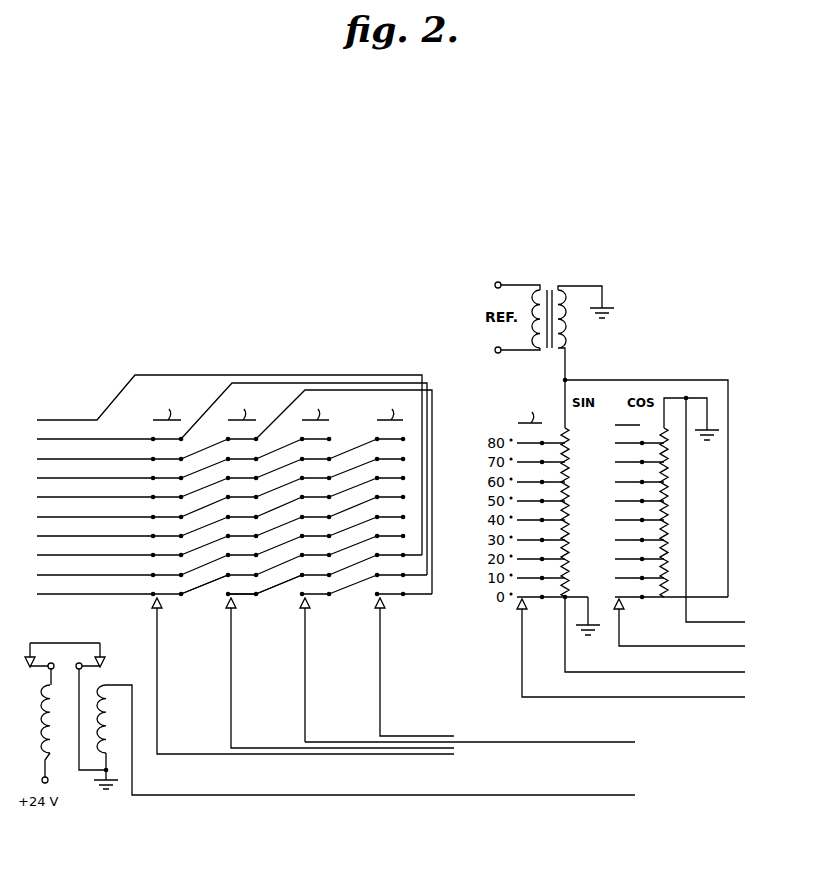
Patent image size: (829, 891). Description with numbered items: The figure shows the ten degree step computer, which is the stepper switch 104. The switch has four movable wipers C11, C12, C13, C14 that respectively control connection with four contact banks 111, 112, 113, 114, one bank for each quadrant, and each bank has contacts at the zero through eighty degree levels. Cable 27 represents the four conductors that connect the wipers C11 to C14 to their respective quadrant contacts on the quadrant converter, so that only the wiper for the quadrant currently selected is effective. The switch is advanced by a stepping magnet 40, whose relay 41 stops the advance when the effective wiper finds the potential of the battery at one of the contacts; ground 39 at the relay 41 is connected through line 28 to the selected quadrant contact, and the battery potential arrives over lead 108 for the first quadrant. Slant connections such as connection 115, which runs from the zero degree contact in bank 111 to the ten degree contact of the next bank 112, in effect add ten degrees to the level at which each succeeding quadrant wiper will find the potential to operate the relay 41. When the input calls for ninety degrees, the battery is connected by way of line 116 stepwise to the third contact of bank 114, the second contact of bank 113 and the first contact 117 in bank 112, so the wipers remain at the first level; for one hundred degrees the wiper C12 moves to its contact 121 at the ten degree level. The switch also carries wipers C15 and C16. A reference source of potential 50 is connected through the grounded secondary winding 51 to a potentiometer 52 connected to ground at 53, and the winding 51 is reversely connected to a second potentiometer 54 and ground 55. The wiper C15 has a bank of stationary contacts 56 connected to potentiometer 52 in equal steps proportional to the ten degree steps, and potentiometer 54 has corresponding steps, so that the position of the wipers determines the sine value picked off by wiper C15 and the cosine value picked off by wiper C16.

The 10° step computer switch 104 is at (298, 358).
The lead 108 is at (123, 429).
The contact bank 111 is at (173, 401).
The contact bank 112 is at (247, 401).
The contact bank 113 is at (320, 401).
The contact bank 114 is at (395, 401).
The slant connection 115 is at (186, 592).
The line 116 is at (119, 393).
The first contact 117 is at (257, 594).
The contact 121 is at (228, 593).
The cable 27 is at (572, 738).
The line 28 is at (576, 795).
The ground 39 is at (118, 781).
The stepping magnet 40 is at (35, 734).
The relay 41 is at (110, 687).
The reference source of potential 50 is at (537, 295).
The secondary winding 51 is at (565, 295).
The potentiometer 52 is at (568, 506).
The ground 53 is at (590, 628).
The potentiometer 54 is at (668, 534).
The ground 55 is at (707, 441).
The bank of stationary contacts 56 is at (532, 406).
The movable wiper C11 is at (160, 607).
The movable wiper C12 is at (234, 607).
The movable wiper C13 is at (308, 607).
The movable wiper C14 is at (383, 607).
The wiper C15 is at (517, 612).
The wiper C16 is at (622, 608).